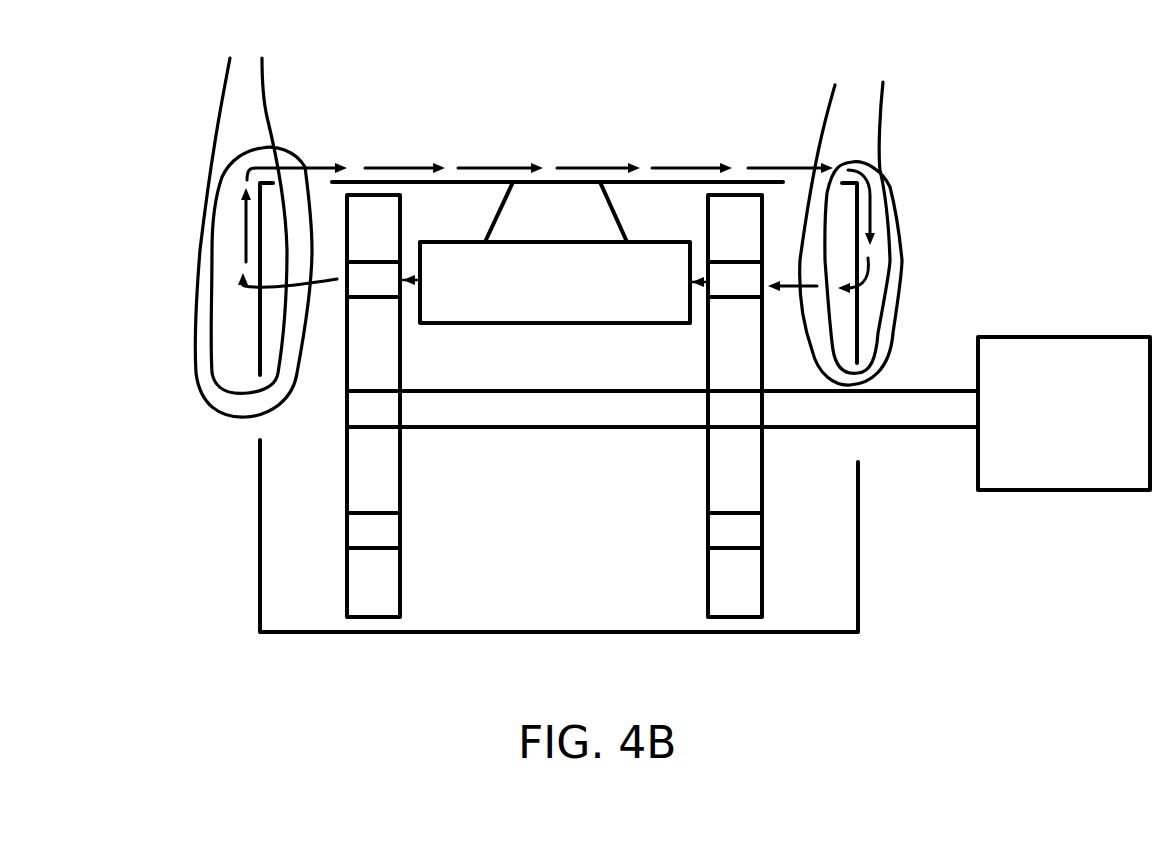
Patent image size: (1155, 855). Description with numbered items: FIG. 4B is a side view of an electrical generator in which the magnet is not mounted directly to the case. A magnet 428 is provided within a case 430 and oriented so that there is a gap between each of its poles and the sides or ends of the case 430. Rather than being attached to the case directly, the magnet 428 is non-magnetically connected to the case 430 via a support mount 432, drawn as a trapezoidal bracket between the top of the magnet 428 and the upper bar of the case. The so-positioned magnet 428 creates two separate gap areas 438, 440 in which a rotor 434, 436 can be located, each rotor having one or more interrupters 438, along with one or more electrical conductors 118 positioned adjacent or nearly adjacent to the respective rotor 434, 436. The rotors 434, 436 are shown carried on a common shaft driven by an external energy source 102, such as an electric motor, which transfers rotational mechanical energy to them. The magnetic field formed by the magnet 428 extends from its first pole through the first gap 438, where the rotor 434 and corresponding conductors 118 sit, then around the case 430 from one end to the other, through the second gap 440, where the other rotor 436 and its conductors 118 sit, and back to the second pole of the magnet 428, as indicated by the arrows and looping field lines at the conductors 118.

The external energy source 102 is at (1060, 333).
The electrical conductor 118 is at (267, 117).
The magnet 428 is at (583, 325).
The case 430 is at (858, 520).
The support mount 432 is at (553, 180).
The rotor 434 is at (400, 467).
The rotor 436 is at (762, 477).
The first gap 438 is at (330, 205).
The second gap 440 is at (773, 205).